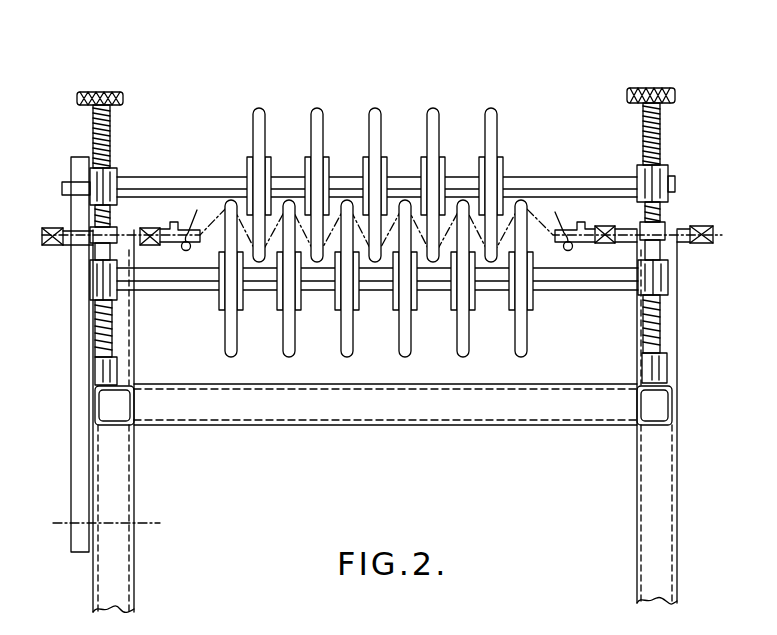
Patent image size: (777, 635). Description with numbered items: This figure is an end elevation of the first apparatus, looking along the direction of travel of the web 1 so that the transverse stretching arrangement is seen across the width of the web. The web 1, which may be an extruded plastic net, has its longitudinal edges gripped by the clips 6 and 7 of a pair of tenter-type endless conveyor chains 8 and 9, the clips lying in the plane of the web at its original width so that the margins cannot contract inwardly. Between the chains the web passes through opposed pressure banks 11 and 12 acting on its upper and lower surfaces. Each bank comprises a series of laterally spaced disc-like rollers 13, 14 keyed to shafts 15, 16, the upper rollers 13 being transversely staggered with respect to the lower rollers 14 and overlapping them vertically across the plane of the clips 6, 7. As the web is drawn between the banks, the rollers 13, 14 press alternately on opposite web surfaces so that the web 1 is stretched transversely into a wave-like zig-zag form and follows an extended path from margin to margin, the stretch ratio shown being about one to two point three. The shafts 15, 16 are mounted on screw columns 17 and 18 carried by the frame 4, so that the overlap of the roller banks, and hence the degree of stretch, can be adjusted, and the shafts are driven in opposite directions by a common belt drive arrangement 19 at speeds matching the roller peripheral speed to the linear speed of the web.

The web 1 is at (211, 220).
The frame 4 is at (503, 412).
The clip 6 is at (573, 246).
The clip 7 is at (177, 238).
The endless conveyor chain 8 is at (704, 226).
The endless conveyor chain 9 is at (53, 246).
The pressure bank 11 is at (508, 140).
The pressure bank 12 is at (538, 327).
The disc-like rollers 13 is at (314, 113).
The disc-like rollers 14 is at (289, 344).
The shaft 15 is at (182, 180).
The shaft 16 is at (187, 291).
The screw column 17 is at (92, 130).
The screw column 18 is at (660, 130).
The belt drive arrangement 19 is at (78, 456).